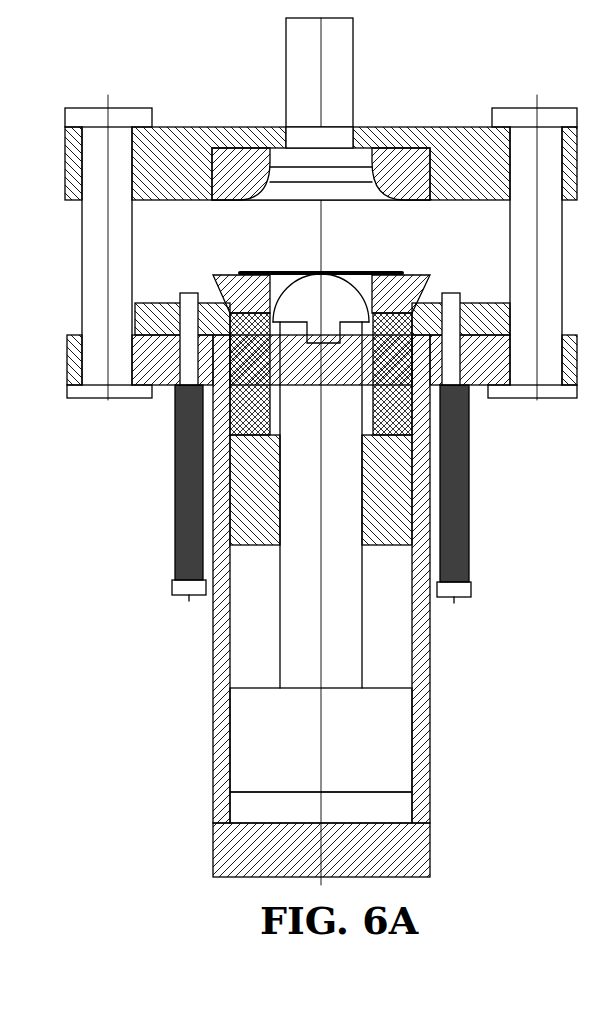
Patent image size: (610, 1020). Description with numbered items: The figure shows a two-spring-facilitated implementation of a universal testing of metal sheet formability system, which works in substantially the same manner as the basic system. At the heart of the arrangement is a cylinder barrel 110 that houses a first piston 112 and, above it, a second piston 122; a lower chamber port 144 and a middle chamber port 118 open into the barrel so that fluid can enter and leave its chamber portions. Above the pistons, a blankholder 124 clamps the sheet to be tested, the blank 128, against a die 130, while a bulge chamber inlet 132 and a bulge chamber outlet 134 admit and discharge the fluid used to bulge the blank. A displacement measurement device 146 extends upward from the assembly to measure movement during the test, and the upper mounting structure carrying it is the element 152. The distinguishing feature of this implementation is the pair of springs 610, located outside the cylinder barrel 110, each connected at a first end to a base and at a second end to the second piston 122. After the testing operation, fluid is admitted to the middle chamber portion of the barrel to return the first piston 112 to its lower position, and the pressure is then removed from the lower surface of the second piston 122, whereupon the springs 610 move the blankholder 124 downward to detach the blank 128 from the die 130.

The upper clamp plate 152 is at (188, 147).
The displacement measurement device 146 is at (335, 77).
The die 130 is at (403, 182).
The blank 128 is at (275, 270).
The bulge chamber outlet 134 is at (215, 278).
The bulge chamber inlet 132 is at (425, 279).
The blankholder 124 is at (425, 290).
The springs 610 is at (190, 448).
The second piston 122 is at (390, 470).
The middle chamber port 118 is at (213, 610).
The first piston 112 is at (278, 728).
The lower chamber port 144 is at (213, 803).
The cylinder barrel 110 is at (410, 847).